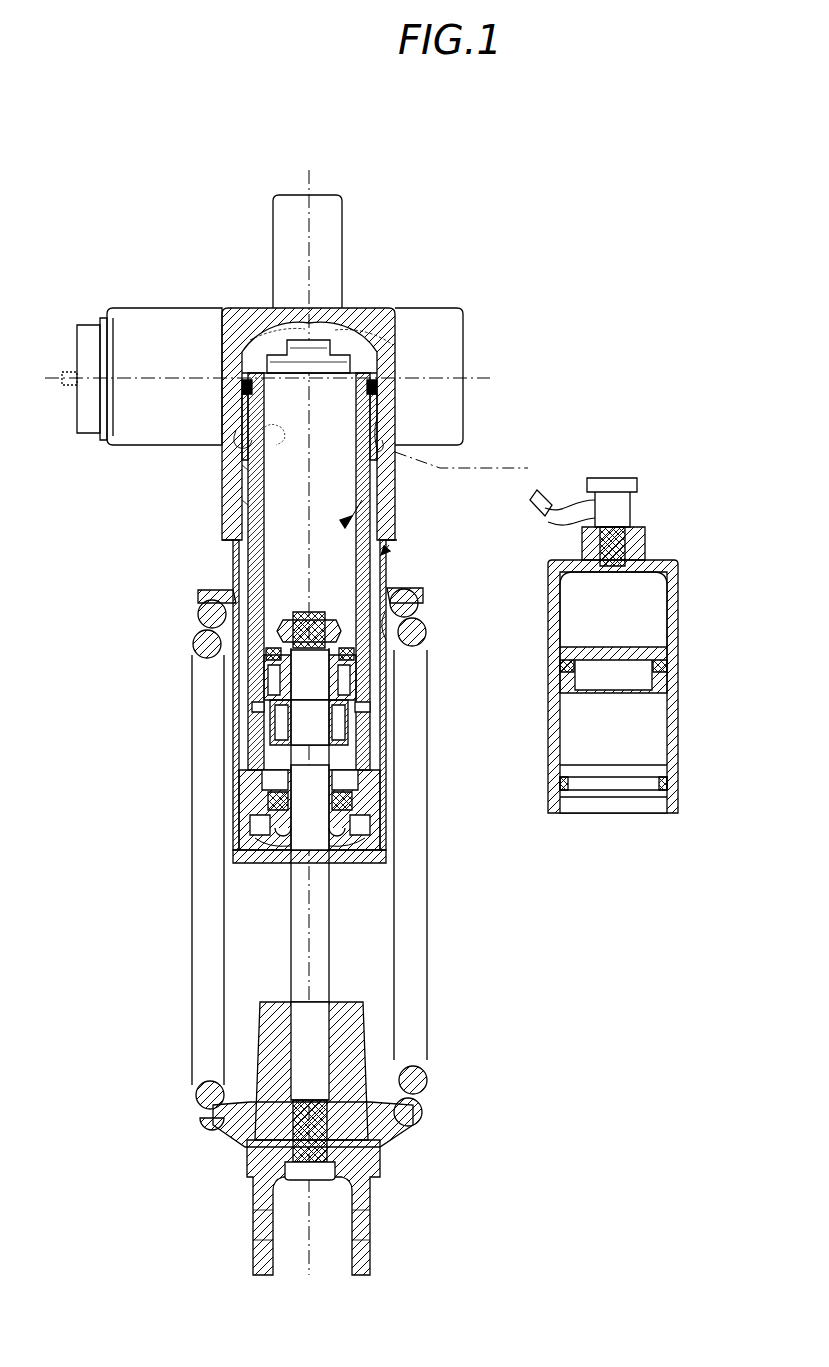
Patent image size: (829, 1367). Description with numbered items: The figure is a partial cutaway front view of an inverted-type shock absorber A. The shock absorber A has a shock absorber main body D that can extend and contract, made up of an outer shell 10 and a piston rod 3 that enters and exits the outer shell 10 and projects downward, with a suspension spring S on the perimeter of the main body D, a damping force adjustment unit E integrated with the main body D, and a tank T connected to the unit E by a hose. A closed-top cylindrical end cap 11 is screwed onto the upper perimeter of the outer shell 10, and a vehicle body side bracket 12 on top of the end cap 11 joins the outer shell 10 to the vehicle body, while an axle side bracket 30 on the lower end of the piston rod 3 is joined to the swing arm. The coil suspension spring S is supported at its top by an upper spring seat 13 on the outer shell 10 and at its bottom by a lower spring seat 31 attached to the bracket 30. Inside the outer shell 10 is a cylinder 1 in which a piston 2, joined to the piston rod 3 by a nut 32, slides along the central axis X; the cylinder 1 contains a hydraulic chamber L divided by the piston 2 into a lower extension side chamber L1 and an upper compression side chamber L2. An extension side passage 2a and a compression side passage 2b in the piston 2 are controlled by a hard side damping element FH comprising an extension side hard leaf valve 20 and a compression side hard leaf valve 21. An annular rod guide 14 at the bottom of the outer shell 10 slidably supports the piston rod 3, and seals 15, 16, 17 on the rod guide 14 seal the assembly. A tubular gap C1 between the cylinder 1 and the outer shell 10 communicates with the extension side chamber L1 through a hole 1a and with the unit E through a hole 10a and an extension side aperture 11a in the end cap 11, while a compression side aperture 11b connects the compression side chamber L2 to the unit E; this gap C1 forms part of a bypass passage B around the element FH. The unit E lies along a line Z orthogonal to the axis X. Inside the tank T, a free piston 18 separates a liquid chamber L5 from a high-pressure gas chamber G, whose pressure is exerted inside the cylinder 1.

The shock absorber A is at (100, 292).
The cylinder 1 is at (250, 527).
The hole 1a is at (258, 708).
The piston 2 is at (345, 660).
The extension side passage 2a is at (270, 672).
The compression side passage 2b is at (372, 682).
The piston rod 3 is at (330, 945).
The outer shell 10 is at (234, 555).
The hole 10a is at (384, 444).
The end cap 11 is at (224, 325).
The extension side aperture 11a is at (244, 403).
The compression side aperture 11b is at (340, 343).
The vehicle body side bracket 12 is at (273, 246).
The upper spring seat 13 is at (196, 594).
The rod guide 14 is at (368, 828).
The seal 15 is at (273, 865).
The seal 16 is at (262, 815).
The seal 17 is at (360, 795).
The free piston 18 is at (664, 688).
The extension side hard leaf valve 20 is at (200, 652).
The compression side hard leaf valve 21 is at (345, 707).
The axle side bracket 30 is at (255, 1176).
The lower spring seat 31 is at (218, 1142).
The nut 32 is at (343, 622).
The bypass passage B is at (246, 480).
The tubular gap C1 is at (372, 580).
The shock absorber main body D is at (390, 549).
The damping force adjustment unit E is at (432, 308).
The hard side damping element FH is at (398, 620).
The gas chamber G is at (622, 743).
The hydraulic chamber L is at (364, 500).
The extension side chamber L1 is at (270, 748).
The compression side chamber L2 is at (305, 507).
The liquid chamber L5 is at (628, 620).
The suspension spring S is at (418, 1082).
The tank T is at (680, 628).
The central axis X is at (308, 707).
The line Z is at (279, 378).